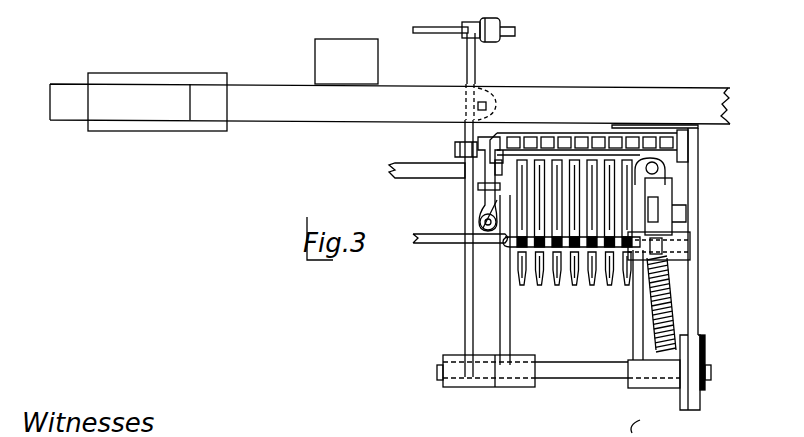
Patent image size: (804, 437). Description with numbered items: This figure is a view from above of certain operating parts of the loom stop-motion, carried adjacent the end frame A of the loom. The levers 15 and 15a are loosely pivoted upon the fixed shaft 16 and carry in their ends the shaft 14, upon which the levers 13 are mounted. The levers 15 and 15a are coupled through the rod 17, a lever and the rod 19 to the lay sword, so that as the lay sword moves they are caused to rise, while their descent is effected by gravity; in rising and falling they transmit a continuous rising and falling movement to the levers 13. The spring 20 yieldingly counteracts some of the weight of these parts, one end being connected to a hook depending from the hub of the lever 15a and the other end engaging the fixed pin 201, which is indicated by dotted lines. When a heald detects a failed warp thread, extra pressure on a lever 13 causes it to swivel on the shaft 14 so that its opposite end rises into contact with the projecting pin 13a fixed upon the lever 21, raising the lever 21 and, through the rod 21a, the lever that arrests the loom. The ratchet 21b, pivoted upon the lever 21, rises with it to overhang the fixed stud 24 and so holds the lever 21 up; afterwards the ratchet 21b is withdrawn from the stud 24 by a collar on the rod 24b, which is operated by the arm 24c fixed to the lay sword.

The end frame A is at (318, 113).
The fixed stud 24 is at (497, 150).
The rod 21a is at (431, 33).
The arm 24c is at (402, 172).
The lever 21 is at (478, 197).
The ratchet 21b is at (480, 216).
The rod 24b is at (483, 228).
The rod 19 is at (415, 240).
The projecting pin 13a is at (575, 150).
The lever 13 is at (605, 280).
The lever 15 is at (504, 332).
The rod 17 is at (662, 205).
The shaft 14 is at (686, 213).
The fixed pin 201 is at (690, 250).
The spring 20 is at (665, 298).
The lever 15a is at (640, 335).
The fixed shaft 16 is at (575, 375).